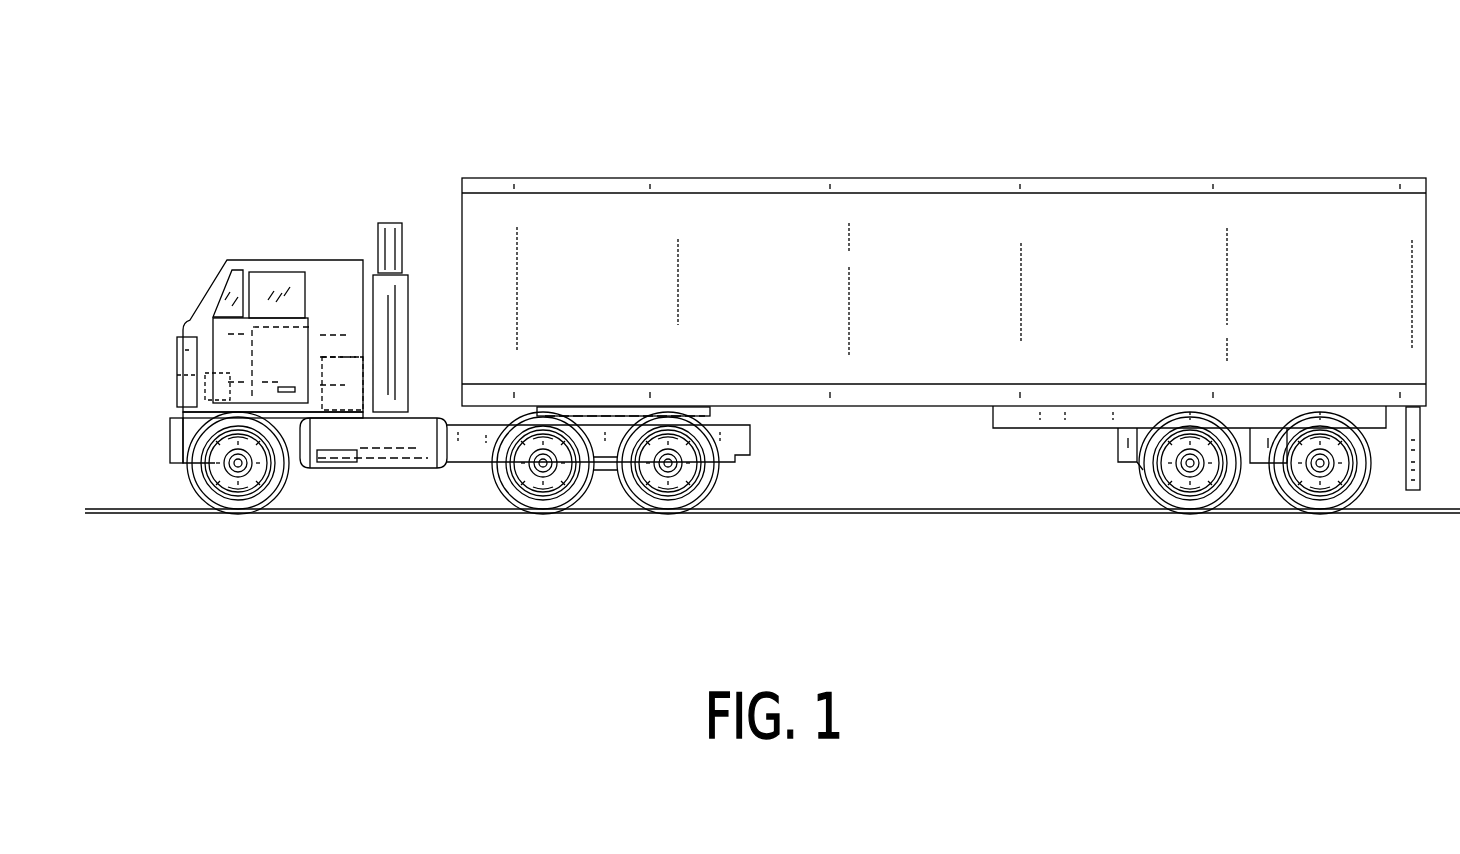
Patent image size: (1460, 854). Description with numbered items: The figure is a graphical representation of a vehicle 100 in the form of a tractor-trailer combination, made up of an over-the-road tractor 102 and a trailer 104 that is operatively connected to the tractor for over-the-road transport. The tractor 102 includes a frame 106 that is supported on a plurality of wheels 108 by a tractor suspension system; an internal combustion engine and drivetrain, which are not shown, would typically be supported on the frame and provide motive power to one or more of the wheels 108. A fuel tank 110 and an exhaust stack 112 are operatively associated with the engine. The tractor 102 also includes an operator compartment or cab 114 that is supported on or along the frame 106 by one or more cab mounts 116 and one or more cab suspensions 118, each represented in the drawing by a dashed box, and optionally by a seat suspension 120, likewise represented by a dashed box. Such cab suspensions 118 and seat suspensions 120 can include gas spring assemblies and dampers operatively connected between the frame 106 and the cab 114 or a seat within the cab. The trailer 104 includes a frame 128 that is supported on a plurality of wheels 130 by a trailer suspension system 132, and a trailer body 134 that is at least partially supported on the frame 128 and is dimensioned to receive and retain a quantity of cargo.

The vehicle 100 is at (326, 124).
The tractor 102 is at (152, 263).
The trailer 104 is at (595, 140).
The frame 106 is at (472, 450).
The wheels 108 is at (243, 503).
The fuel tank 110 is at (400, 455).
The exhaust stack 112 is at (395, 225).
The cab 114 is at (260, 258).
The cab mounts 116 is at (183, 394).
The cab suspensions 118 is at (323, 378).
The seat suspension 120 is at (323, 343).
The frame 128 is at (1057, 417).
The wheels 130 is at (1193, 500).
The trailer suspension system 132 is at (1125, 478).
The trailer body 134 is at (922, 220).